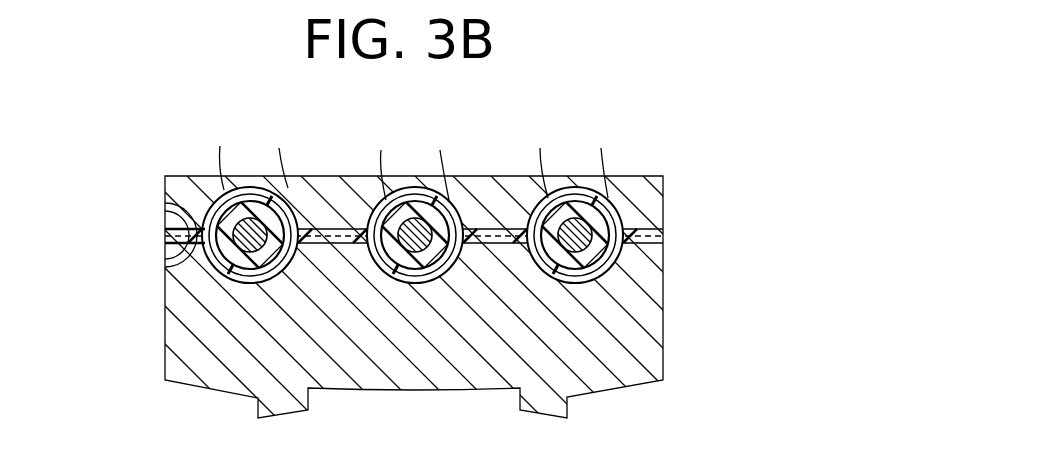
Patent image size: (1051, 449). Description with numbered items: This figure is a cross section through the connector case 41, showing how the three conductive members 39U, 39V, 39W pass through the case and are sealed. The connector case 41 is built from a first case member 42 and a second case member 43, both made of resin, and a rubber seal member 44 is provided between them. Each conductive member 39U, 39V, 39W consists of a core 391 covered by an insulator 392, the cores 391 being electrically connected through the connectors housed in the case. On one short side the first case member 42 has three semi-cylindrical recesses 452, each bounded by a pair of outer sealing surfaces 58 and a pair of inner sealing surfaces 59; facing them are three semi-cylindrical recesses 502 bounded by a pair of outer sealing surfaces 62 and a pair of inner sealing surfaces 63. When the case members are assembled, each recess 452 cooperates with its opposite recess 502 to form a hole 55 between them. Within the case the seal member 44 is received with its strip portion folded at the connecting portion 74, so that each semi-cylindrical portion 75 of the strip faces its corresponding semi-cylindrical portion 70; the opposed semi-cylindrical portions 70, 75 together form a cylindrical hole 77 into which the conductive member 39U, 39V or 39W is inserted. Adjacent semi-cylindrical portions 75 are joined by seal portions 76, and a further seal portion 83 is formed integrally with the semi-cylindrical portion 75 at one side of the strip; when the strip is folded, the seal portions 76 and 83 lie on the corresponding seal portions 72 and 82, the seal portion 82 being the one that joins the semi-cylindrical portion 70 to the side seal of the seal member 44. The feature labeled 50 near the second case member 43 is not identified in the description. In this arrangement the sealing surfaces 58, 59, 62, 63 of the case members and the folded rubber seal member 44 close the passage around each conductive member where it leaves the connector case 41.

The connector case 41 is at (738, 180).
The first case member 42 is at (665, 351).
The second case member 43 is at (666, 182).
The seal member 44 is at (667, 233).
The bus bar 50 is at (482, 177).
The hole 55 is at (100, 273).
The outer sealing surfaces 58 is at (180, 224).
The inner sealing surfaces 59 is at (291, 268).
The outer sealing surfaces 62 is at (665, 250).
The inner sealing surfaces 63 is at (358, 272).
The semi-cylindrical portion 70 is at (268, 284).
The seal portion 72 is at (340, 248).
The connecting portion 74 is at (665, 210).
The semi-cylindrical portions 75 is at (197, 188).
The seal portions 76 is at (368, 177).
The hole 77 is at (711, 256).
The seal portion 82 is at (178, 245).
The seal portion 83 is at (180, 228).
The core 391 is at (381, 161).
The insulator 392 is at (441, 161).
The conductive member 39U is at (305, 121).
The conductive member 39V is at (465, 122).
The conductive member 39W is at (627, 121).
The recesses 452 is at (188, 296).
The recesses 502 is at (178, 272).